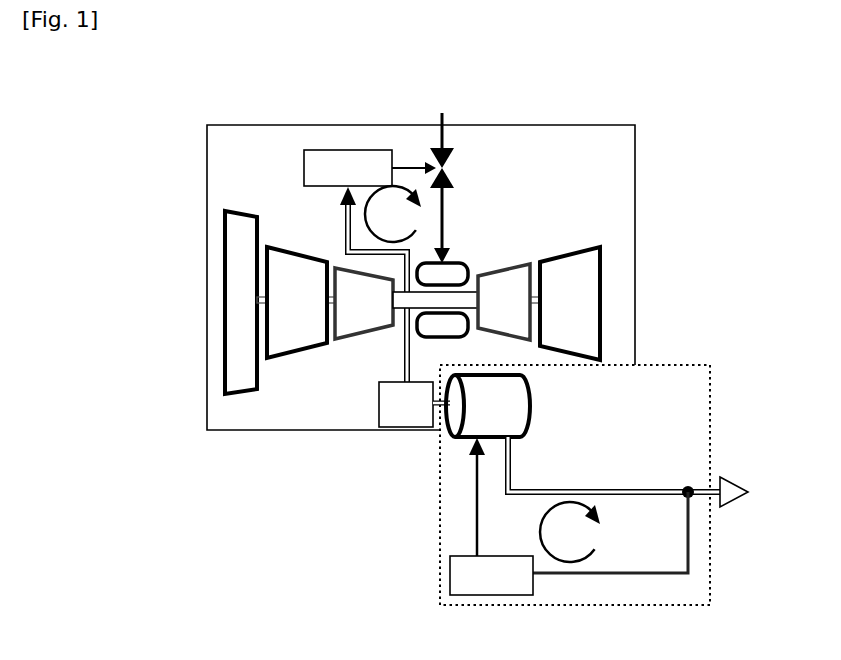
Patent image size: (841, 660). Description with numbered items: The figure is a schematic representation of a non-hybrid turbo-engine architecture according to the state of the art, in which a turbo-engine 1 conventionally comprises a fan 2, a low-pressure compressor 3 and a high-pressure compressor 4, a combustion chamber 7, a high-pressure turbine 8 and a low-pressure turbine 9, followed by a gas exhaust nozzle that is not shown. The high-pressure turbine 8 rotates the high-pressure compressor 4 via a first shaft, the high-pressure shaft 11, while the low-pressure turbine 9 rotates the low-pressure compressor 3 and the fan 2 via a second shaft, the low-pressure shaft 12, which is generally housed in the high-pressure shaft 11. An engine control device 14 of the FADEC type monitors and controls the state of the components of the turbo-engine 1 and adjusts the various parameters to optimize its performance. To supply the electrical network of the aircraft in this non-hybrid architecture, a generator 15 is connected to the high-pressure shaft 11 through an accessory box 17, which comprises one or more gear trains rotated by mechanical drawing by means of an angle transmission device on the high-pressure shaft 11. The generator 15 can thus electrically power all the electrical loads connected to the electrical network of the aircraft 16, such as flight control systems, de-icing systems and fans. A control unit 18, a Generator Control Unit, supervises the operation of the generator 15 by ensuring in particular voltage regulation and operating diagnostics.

The turbo-engine 1 is at (242, 146).
The fan 2 is at (240, 243).
The low-pressure compressor 3 is at (290, 335).
The high-pressure compressor 4 is at (345, 338).
The combustion chamber 7 is at (448, 280).
The high-pressure turbine 8 is at (508, 292).
The low-pressure turbine 9 is at (570, 275).
The high-pressure shaft 11 is at (400, 333).
The low-pressure shaft 12 is at (393, 280).
The engine control device 14 is at (370, 196).
The generator 15 is at (510, 398).
The electrical network of the aircraft 16 is at (657, 488).
The accessory box 17 is at (405, 415).
The control unit 18 is at (525, 548).